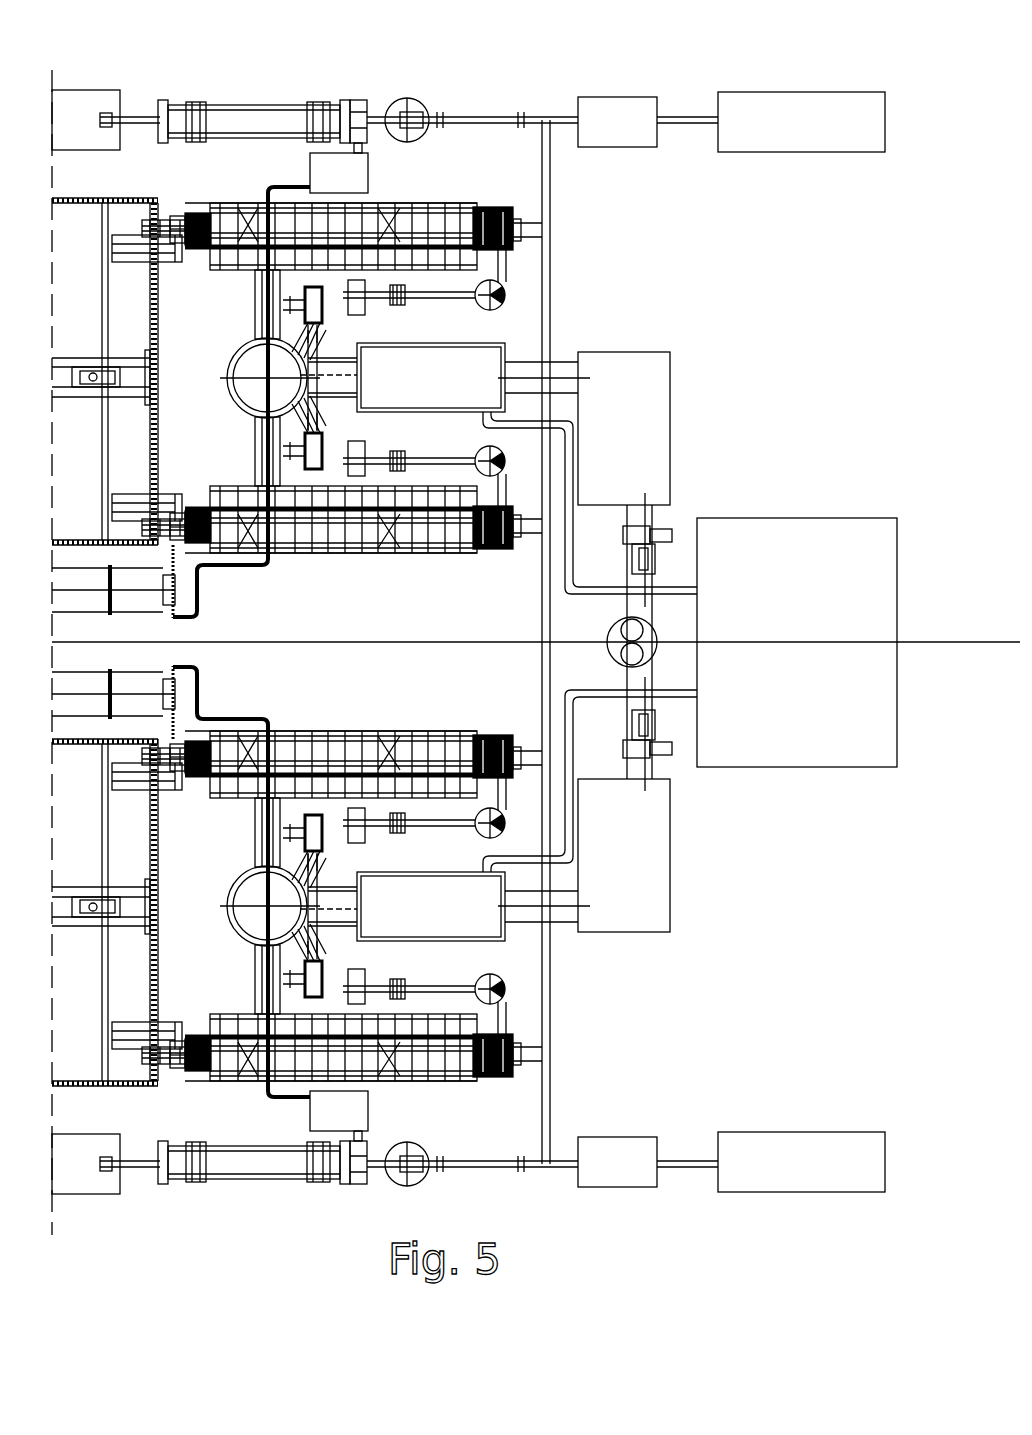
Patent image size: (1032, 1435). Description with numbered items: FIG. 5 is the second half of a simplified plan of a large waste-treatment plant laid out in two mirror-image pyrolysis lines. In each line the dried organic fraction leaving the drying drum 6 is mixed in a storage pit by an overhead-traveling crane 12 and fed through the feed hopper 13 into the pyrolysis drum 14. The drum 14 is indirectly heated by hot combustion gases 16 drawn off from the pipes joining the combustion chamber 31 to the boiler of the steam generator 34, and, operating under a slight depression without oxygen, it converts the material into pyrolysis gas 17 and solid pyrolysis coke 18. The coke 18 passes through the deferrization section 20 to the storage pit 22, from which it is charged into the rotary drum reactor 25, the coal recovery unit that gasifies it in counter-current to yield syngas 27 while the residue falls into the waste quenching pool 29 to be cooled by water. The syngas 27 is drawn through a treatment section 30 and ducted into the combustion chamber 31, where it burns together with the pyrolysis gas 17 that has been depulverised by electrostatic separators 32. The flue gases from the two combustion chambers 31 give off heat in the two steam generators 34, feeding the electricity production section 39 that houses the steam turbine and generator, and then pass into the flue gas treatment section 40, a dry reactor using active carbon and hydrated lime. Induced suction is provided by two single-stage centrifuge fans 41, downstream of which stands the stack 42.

The drying drum 6 is at (65, 590).
The overhead-traveling crane 12 is at (85, 398).
The feed hopper 13 is at (112, 500).
The pyrolysis drum 14 is at (372, 205).
The hot combustion gases 16 is at (258, 295).
The pyrolysis gas 17 is at (505, 297).
The pyrolysis coke 18 is at (552, 200).
The deferrization section 20 is at (600, 102).
The storage pit 22 is at (413, 108).
The rotary drum reactor 25 is at (218, 112).
The syngas 27 is at (268, 190).
The waste quenching pool 29 is at (95, 92).
The treatment section 30 is at (310, 175).
The combustion chamber 31 is at (245, 398).
The electrostatic separators 32 is at (490, 310).
The steam generator 34 is at (400, 352).
The electricity production section 39 is at (735, 522).
The flue gas treatment section 40 is at (640, 358).
The centrifuge fans 41 is at (668, 527).
The stack 42 is at (610, 640).